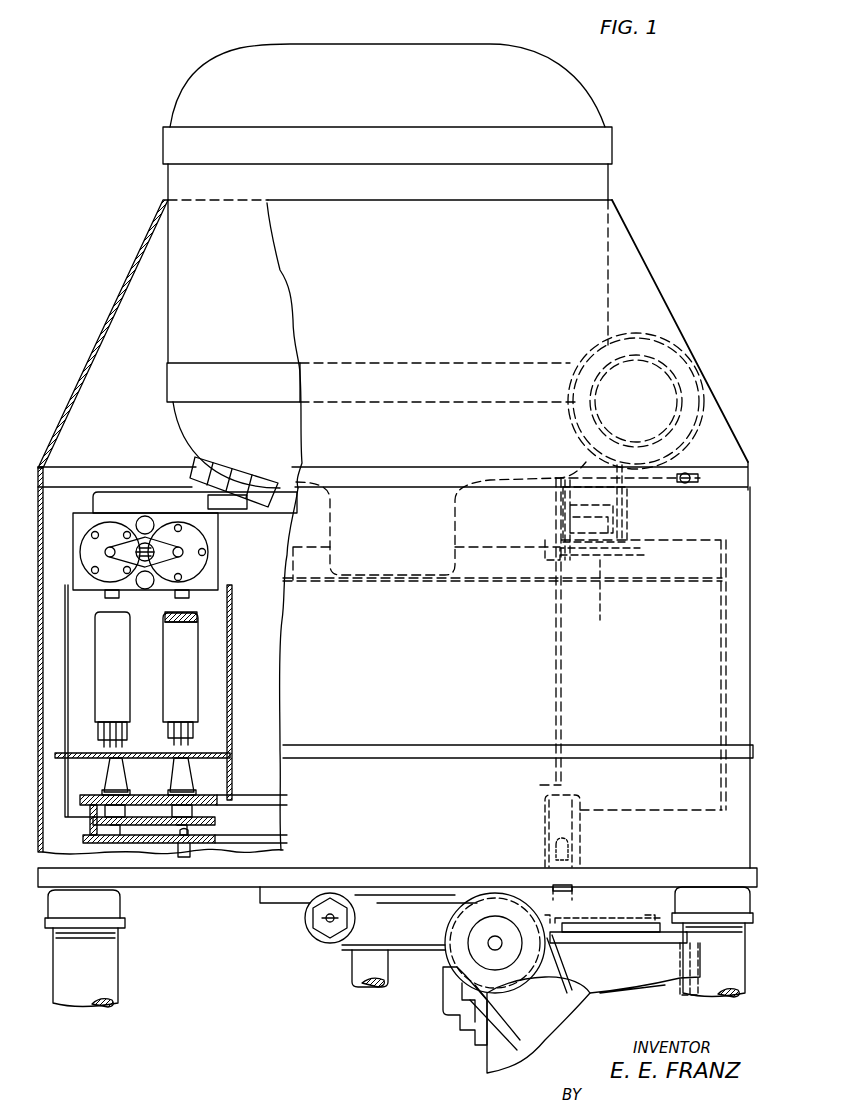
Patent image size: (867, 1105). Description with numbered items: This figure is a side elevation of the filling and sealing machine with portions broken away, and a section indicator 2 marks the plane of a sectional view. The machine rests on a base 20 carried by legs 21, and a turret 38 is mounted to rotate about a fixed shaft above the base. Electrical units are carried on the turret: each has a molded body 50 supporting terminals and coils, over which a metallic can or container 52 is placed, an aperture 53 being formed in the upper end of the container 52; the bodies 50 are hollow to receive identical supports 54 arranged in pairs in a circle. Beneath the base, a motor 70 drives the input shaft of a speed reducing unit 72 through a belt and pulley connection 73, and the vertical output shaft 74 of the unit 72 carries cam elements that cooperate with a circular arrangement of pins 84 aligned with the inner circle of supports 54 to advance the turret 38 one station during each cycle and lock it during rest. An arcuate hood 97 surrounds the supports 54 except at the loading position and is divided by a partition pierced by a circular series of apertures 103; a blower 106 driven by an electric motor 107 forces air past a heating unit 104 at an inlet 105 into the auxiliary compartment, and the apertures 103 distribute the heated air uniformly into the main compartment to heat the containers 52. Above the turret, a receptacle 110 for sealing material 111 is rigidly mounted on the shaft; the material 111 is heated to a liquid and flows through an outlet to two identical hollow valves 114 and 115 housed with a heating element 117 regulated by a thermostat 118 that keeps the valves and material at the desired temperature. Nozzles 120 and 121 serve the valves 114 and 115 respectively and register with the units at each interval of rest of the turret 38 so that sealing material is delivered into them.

The section line 2 is at (26, 497).
The base 20 is at (168, 886).
The legs 21 is at (110, 973).
The turret 38 is at (273, 826).
The molded body 50 is at (97, 732).
The metallic can or container 52 is at (100, 664).
The aperture 53 is at (190, 620).
The supports 54 is at (106, 778).
The motor 70 is at (495, 1060).
The speed reducing unit 72 is at (480, 1017).
The belt and pulley connection 73 is at (493, 1040).
The output shaft 74 is at (613, 922).
The pins 84 is at (186, 853).
The hood 97 is at (724, 628).
The apertures 103 is at (605, 580).
The heating unit 104 is at (628, 526).
The inlet 105 is at (607, 549).
The blower 106 is at (690, 362).
The electric motor 107 is at (686, 402).
The receptacle 110 is at (600, 179).
The sealing material 111 is at (185, 625).
The valve 114 is at (205, 545).
The valve 115 is at (95, 551).
The heating element 117 is at (145, 590).
The thermostat 118 is at (146, 516).
The outlet or nozzle 120 is at (190, 598).
The outlet or nozzle 121 is at (106, 600).